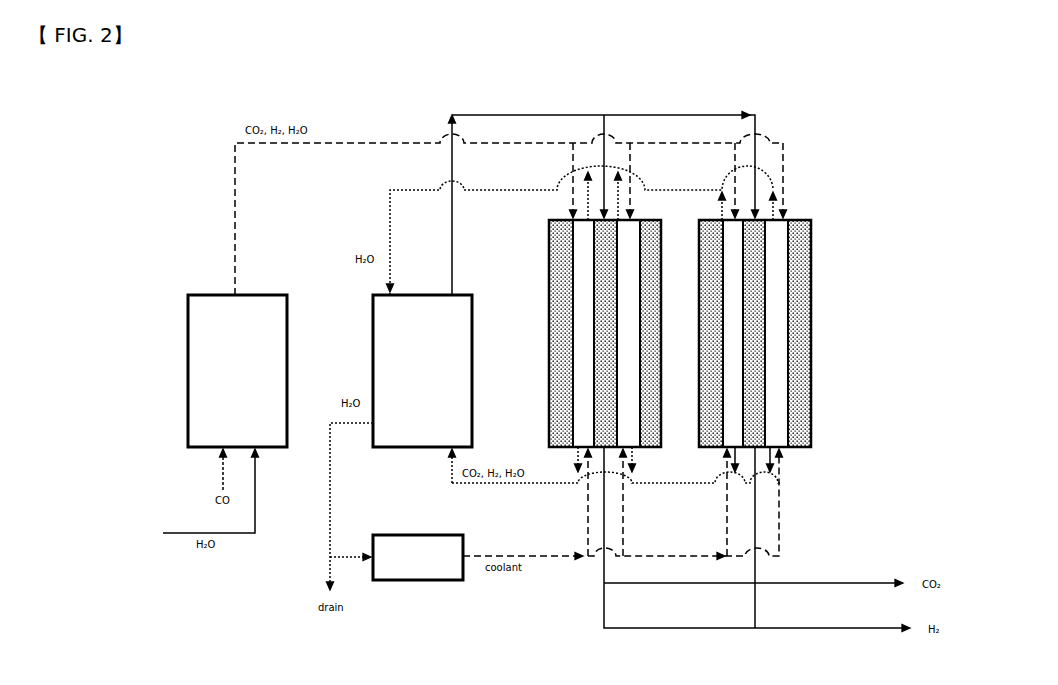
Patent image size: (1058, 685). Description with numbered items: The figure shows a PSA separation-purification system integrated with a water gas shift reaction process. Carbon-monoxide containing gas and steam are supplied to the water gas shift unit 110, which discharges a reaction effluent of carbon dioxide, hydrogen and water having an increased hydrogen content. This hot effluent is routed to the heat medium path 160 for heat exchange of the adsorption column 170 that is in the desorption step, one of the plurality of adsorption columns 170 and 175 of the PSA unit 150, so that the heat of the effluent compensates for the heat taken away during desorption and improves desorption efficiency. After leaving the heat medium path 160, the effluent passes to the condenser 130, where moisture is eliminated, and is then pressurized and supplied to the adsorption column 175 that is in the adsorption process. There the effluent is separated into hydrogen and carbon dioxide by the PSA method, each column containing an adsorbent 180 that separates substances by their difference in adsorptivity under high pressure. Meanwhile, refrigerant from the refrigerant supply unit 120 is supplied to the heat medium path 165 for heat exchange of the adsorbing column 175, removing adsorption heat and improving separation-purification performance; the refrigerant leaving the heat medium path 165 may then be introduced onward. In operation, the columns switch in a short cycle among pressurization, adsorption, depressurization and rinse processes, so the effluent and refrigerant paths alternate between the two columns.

The water gas shift unit 110 is at (188, 400).
The refrigerant supply unit 120 is at (463, 538).
The condenser 130 is at (373, 322).
The PSA unit 150 is at (703, 333).
The heat medium path 160 is at (778, 400).
The heat medium path 165 is at (580, 422).
The adsorption column 170 is at (798, 332).
The adsorption column 175 is at (548, 389).
The adsorbent 180 is at (812, 276).